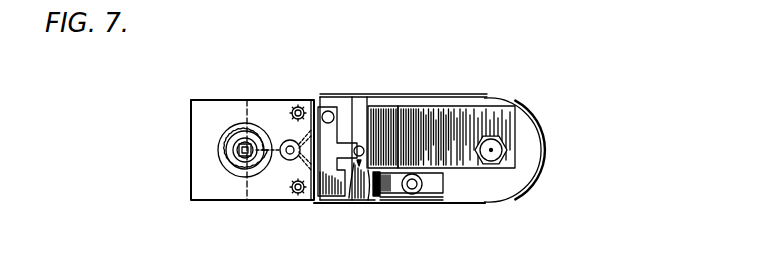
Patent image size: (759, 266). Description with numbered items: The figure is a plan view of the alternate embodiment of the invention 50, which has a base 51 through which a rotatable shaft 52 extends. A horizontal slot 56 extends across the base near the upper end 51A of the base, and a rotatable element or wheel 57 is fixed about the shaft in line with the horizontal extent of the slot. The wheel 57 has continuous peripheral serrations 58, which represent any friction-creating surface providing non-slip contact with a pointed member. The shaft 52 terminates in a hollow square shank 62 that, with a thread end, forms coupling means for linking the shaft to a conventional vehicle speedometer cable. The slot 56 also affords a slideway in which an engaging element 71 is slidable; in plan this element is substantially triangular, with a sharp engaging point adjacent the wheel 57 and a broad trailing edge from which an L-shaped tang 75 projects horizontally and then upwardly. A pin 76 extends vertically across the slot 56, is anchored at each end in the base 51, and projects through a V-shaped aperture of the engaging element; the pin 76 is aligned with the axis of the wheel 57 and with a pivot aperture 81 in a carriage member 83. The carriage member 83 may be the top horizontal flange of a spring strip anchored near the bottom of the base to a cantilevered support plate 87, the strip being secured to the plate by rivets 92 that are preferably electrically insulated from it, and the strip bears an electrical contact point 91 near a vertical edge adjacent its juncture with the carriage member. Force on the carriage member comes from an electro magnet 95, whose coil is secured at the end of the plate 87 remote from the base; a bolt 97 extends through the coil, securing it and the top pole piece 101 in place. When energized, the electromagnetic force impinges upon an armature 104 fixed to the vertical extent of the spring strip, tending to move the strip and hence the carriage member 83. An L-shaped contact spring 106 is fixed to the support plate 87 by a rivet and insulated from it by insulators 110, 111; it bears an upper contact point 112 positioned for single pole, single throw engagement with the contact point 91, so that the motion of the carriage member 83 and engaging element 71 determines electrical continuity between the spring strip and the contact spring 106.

The alternate embodiment of the invention 50 is at (540, 108).
The base 51 is at (191, 153).
The upper end of the base 51A is at (218, 114).
The rotatable shaft 52 is at (231, 163).
The horizontal slot 56 is at (248, 122).
The wheel 57 is at (224, 141).
The peripheral serrations 58 is at (243, 172).
The hollow square shank 62 is at (244, 142).
The engaging element 71 is at (342, 108).
The L-shaped tang 75 is at (352, 190).
The pin 76 is at (289, 159).
The pivot aperture 81 is at (362, 107).
The carriage member 83 is at (355, 108).
The cantilevered support plate 87 is at (474, 205).
The electrical contact point 91 is at (370, 190).
The rivets 92 is at (322, 100).
The electro magnet 95 is at (522, 152).
The bolt 97 is at (532, 186).
The top pole piece 101 is at (433, 107).
The armature 104 is at (392, 107).
The L-shaped contact spring 106 is at (393, 195).
The insulator 110 is at (409, 196).
The insulator 111 is at (440, 195).
The upper contact point 112 is at (377, 197).